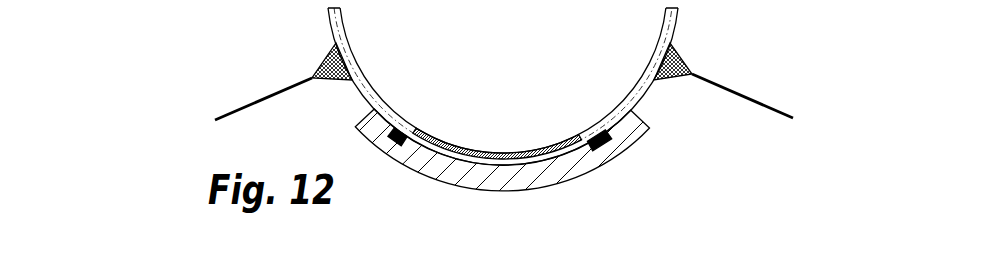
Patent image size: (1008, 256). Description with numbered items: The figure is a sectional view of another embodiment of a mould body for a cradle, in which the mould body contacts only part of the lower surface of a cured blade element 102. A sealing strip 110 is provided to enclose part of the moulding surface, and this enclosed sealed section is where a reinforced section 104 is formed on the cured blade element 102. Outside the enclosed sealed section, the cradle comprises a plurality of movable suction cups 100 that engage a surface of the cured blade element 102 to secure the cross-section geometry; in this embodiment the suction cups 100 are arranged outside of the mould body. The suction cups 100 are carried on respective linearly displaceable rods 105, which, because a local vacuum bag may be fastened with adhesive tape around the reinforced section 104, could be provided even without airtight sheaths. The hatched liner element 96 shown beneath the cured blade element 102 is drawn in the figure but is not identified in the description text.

The liner 96 is at (651, 126).
The movable suction cups 100 is at (322, 63).
The cured blade element 102 is at (346, 42).
The reinforced section 104 is at (484, 152).
The linearly displaceable rods 105 is at (272, 94).
The sealing strip 110 is at (388, 139).